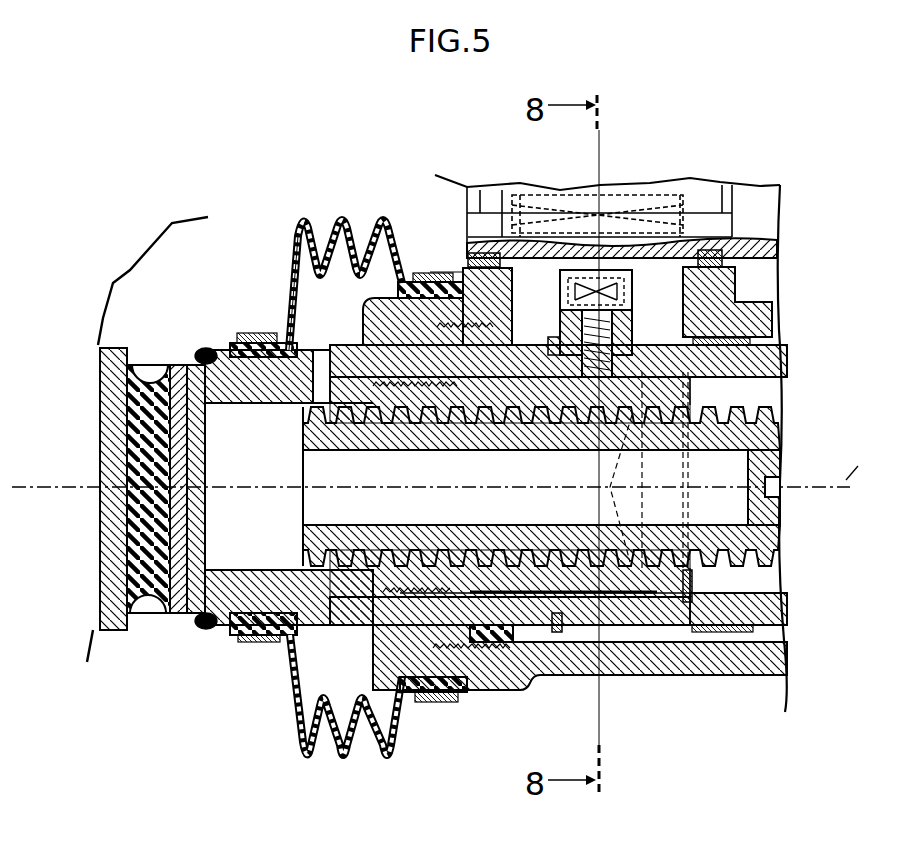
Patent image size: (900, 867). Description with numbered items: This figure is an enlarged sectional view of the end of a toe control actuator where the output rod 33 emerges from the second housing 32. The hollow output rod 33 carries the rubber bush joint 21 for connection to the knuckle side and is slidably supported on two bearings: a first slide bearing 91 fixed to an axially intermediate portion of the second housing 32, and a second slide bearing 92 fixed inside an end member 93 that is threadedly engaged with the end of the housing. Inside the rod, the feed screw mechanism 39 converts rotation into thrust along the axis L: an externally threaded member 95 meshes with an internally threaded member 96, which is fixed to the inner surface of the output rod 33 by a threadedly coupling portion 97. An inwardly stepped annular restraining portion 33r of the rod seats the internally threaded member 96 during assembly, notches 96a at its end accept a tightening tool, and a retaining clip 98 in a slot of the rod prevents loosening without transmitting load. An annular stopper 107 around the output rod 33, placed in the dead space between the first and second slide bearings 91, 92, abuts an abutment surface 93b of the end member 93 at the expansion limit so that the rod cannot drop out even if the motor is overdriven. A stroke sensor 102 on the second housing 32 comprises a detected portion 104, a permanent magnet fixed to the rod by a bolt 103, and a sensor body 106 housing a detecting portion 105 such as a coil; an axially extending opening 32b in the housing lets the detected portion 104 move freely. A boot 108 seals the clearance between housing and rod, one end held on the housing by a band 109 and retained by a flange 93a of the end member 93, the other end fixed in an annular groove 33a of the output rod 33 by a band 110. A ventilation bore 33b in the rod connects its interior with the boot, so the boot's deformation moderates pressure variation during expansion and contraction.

The rubber bush joint 21 is at (142, 384).
The output rod 33 is at (292, 675).
The annular groove 33a is at (246, 336).
The ventilation bore 33b is at (293, 272).
The annular restraining portion 33r is at (393, 408).
The band 110 is at (254, 332).
The boot 108 is at (345, 278).
The band 109 is at (440, 279).
The flange 93a is at (345, 272).
The end member 93 is at (484, 656).
The abutment surface 93b is at (523, 677).
The second slide bearing 92 is at (378, 304).
The second housing 32 is at (657, 680).
The axially extending opening 32b is at (510, 282).
The first slide bearing 91 is at (736, 336).
The stroke sensor 102 is at (762, 204).
The bolt 103 is at (608, 326).
The detected portion 104 is at (668, 205).
The detecting portion 105 is at (613, 195).
The sensor body 106 is at (487, 200).
The notches 96a is at (615, 372).
The internally threaded member 96 is at (522, 535).
The externally threaded member 95 is at (555, 512).
The retaining clip 98 is at (667, 417).
The threadedly coupling portion 97 is at (318, 640).
The annular stopper 107 is at (558, 634).
The feed screw mechanism 39 is at (710, 665).
The axis L is at (865, 461).